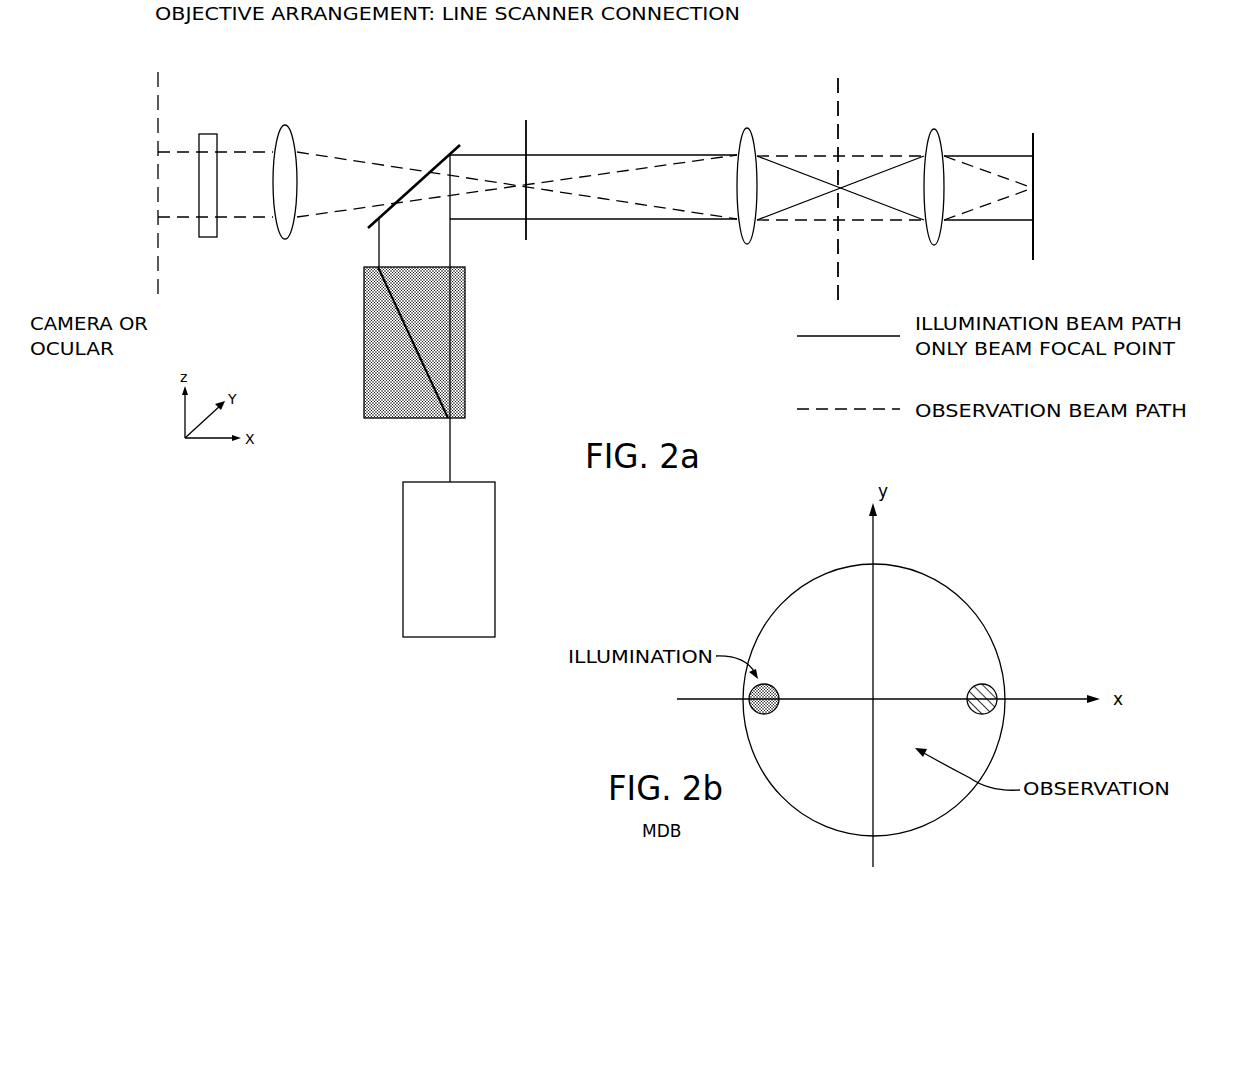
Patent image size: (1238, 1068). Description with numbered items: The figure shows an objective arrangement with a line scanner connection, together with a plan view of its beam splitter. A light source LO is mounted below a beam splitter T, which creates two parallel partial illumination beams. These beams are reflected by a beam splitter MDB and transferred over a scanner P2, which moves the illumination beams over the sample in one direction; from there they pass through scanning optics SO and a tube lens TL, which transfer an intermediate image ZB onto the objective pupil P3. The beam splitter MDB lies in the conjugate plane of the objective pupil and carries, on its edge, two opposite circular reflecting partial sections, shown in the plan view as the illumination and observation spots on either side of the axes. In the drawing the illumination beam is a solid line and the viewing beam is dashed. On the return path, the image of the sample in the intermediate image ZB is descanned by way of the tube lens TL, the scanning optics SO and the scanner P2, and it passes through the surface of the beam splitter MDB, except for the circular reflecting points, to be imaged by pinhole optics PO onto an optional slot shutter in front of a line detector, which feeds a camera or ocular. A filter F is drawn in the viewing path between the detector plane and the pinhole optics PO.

In FIG. 2a, the filter F is at (208, 170).
In FIG. 2a, the pinhole optics PO is at (285, 160).
In FIG. 2a, the beam splitter MDB is at (414, 175).
In FIG. 2b, the beam splitter MDB is at (927, 605).
In FIG. 2a, the scanner P2 is at (528, 154).
In FIG. 2a, the scanning optics SO is at (745, 166).
In FIG. 2a, the intermediate image ZB is at (841, 175).
In FIG. 2a, the tube lens TL is at (932, 167).
In FIG. 2a, the objective pupil P3 is at (1037, 174).
In FIG. 2a, the beam splitter T is at (434, 342).
In FIG. 2a, the light source LO is at (470, 559).